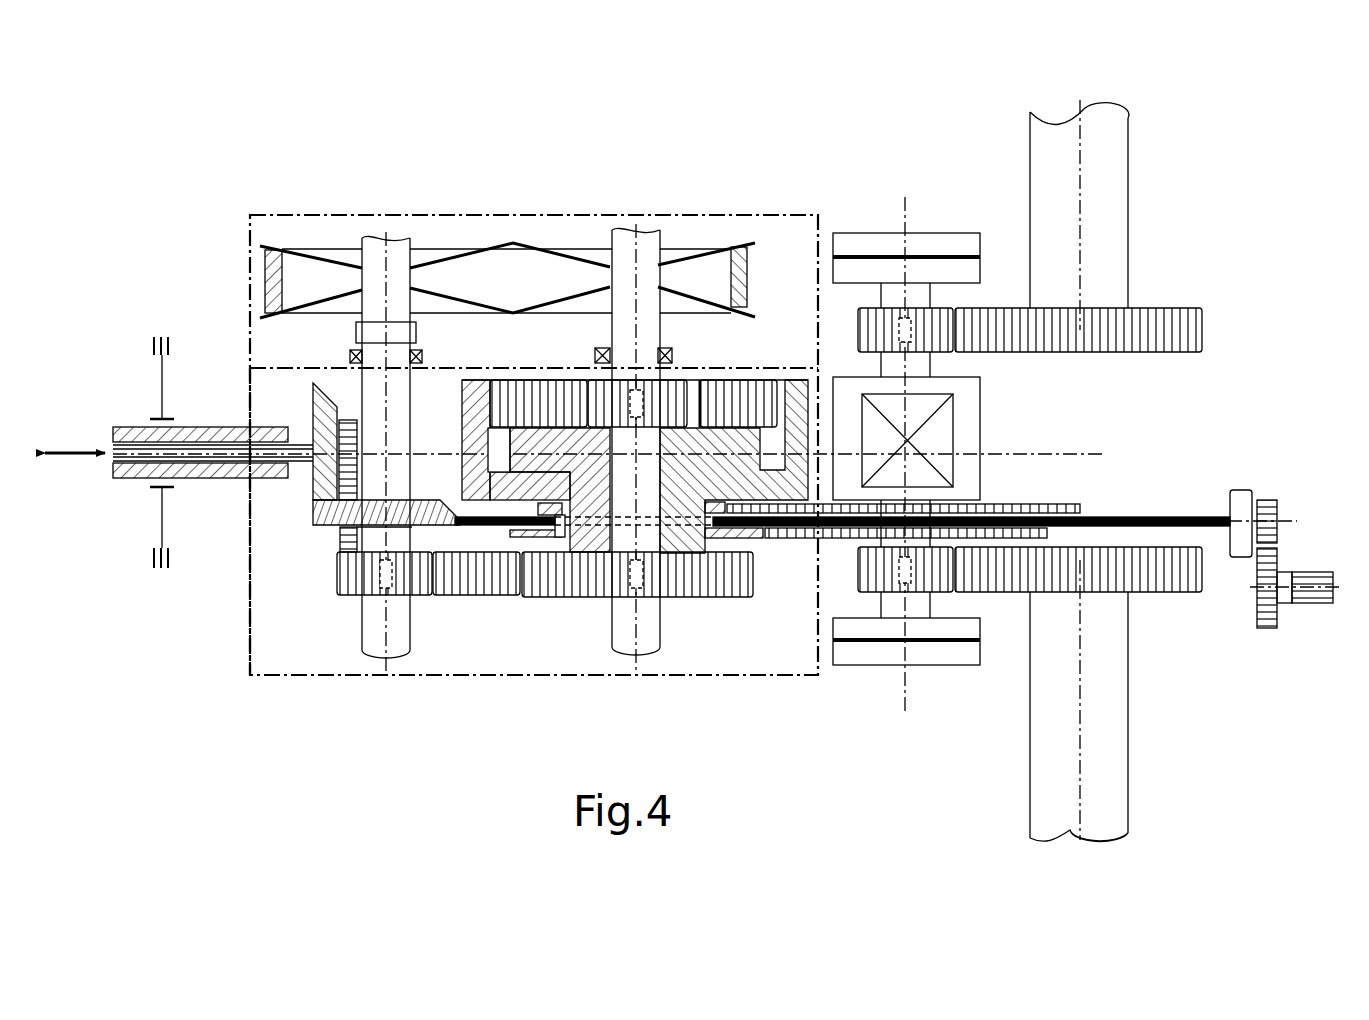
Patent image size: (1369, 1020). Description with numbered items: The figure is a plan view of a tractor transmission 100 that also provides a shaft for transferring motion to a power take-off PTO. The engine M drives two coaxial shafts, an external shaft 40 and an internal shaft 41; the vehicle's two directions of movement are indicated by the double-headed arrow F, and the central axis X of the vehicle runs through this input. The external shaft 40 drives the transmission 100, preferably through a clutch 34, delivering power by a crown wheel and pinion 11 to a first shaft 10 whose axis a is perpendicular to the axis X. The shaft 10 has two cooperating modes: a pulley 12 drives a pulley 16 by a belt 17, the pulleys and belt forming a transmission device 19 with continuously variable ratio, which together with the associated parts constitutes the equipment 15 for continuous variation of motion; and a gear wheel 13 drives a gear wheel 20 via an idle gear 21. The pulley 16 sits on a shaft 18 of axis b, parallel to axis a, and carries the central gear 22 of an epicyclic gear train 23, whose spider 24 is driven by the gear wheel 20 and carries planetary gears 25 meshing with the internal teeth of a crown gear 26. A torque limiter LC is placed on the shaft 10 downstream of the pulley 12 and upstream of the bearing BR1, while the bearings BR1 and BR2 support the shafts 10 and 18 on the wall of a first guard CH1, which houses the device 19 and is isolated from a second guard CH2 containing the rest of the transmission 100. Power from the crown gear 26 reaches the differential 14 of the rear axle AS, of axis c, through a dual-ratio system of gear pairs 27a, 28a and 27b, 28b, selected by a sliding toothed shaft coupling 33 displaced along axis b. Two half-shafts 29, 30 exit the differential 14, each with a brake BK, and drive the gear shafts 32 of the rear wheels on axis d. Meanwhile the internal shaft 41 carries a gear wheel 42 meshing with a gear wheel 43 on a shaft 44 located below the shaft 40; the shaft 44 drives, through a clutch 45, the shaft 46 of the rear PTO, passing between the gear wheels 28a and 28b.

The transmission 100 is at (237, 215).
The first guard CH1 is at (305, 240).
The second guard CH2 is at (288, 668).
The first shaft 10 is at (402, 410).
The crown wheel and pinion 11 is at (280, 520).
The pulley 12 is at (328, 257).
The gear wheel 13 is at (345, 596).
The differential 14 is at (973, 414).
The equipment for continuous variation of motion 15 is at (672, 205).
The pulley 16 is at (712, 250).
The belt 17 is at (493, 258).
The shaft 18 is at (652, 248).
The transmission device with continuous variation of the drive ratio 19 is at (446, 242).
The gear wheel 20 is at (573, 597).
The idle gear 21 is at (458, 596).
The central gear 22 is at (717, 382).
The epicyclic gear train 23 is at (585, 372).
The spider 24 is at (683, 556).
The planetary gears 25 is at (527, 393).
The crown gear 26 is at (470, 396).
The gear wheel 27a is at (518, 540).
The gear wheel 27b is at (538, 512).
The gear wheel 28a is at (1047, 533).
The gear wheel 28b is at (1045, 505).
The half-shaft 29 is at (930, 606).
The half-shaft 30 is at (930, 363).
The gear shaft 32 is at (1112, 172).
The sliding toothed shaft coupling 33 is at (552, 540).
The clutch 34 is at (160, 532).
The external shaft 40 is at (222, 478).
The internal shaft 41 is at (193, 462).
The gear wheel 42 is at (312, 497).
The gear wheel 43 is at (340, 548).
The shaft 44 is at (1158, 517).
The clutch 45 is at (1241, 494).
The shaft of the rear PTO 46 is at (1312, 606).
The torque limiter LC is at (353, 331).
The bearing BR1 is at (365, 352).
The bearing BR2 is at (647, 352).
The brake BK is at (866, 245).
The rear axle AS is at (1095, 388).
The power take-off PTO is at (1300, 568).
The engine M is at (112, 418).
The double-headed arrow F is at (75, 439).
The central axis X is at (233, 455).
The axis a is at (386, 657).
The axis b is at (636, 655).
The axis c is at (905, 680).
The axis d is at (1080, 263).